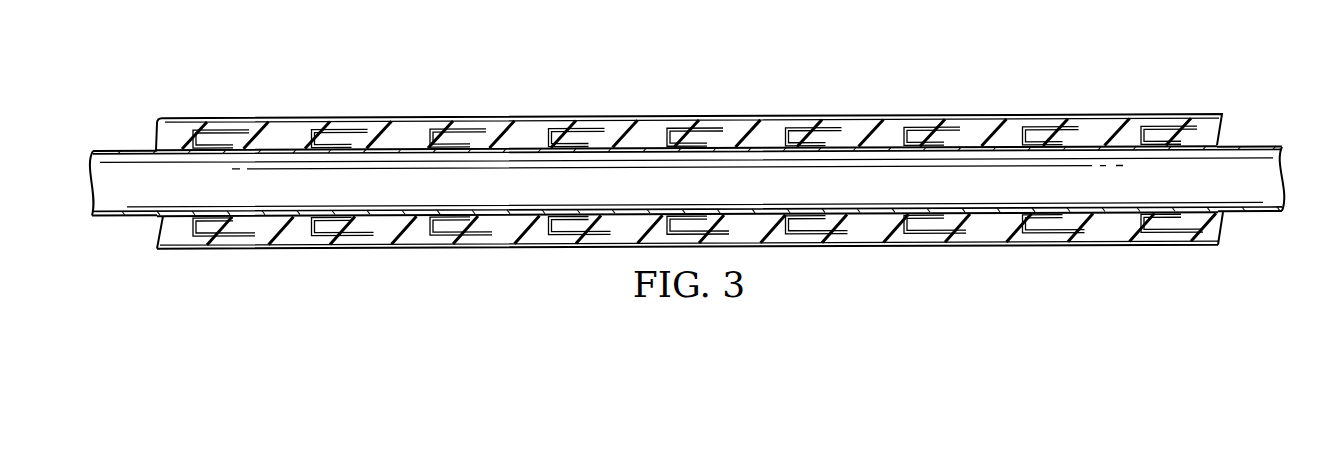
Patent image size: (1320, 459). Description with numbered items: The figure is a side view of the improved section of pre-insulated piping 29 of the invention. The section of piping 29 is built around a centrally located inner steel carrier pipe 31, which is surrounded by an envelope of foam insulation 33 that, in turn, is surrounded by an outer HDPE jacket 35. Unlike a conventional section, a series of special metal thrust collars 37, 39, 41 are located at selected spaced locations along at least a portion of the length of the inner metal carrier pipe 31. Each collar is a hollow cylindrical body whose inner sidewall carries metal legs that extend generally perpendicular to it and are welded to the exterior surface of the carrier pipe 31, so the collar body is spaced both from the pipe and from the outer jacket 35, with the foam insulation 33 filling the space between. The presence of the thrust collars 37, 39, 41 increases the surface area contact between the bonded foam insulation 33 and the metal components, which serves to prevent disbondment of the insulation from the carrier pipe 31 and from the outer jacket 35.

The section of piping 29 is at (593, 102).
The inner steel carrier pipe 31 is at (127, 151).
The envelope of foam insulation 33 is at (985, 133).
The outer HDPE jacket 35 is at (1170, 119).
The metal thrust collar 37 is at (243, 130).
The metal thrust collar 39 is at (342, 130).
The metal thrust collar 41 is at (478, 131).